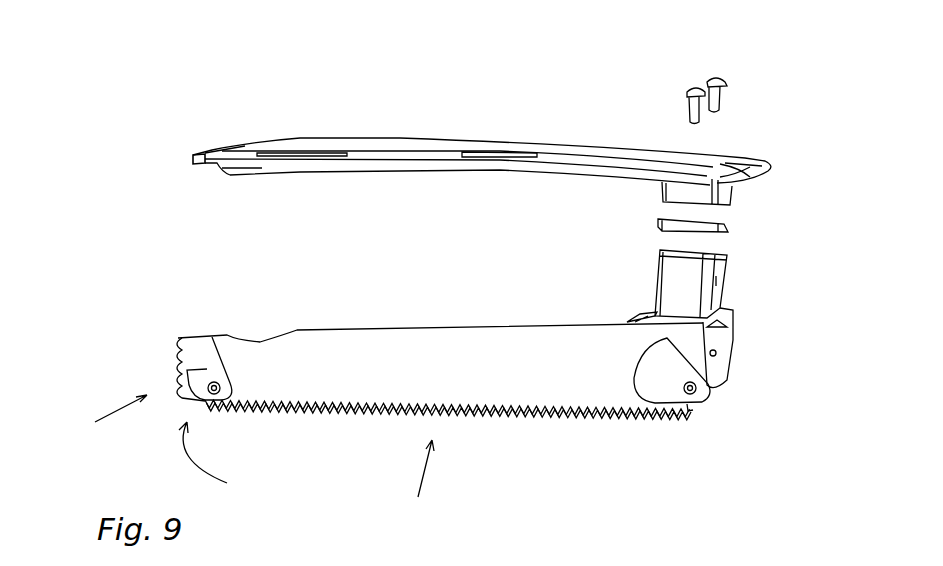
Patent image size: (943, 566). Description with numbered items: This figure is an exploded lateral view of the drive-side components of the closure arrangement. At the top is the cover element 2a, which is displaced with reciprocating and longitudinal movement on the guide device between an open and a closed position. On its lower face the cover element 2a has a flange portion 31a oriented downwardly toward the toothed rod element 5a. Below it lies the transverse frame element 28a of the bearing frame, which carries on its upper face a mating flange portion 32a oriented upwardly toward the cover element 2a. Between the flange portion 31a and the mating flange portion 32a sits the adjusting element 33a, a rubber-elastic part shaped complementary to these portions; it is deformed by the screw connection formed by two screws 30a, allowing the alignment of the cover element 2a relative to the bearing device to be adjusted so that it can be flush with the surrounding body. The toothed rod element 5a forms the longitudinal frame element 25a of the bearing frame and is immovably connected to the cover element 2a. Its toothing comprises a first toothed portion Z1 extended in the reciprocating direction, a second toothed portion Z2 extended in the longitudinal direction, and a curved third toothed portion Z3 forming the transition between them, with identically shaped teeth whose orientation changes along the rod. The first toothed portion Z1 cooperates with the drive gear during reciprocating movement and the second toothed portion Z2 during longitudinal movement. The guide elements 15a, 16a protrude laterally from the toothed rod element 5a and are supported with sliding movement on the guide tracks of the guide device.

The cover element 2a is at (537, 150).
The screws 30a is at (692, 88).
The flange portion 31a is at (725, 213).
The adjusting element 33a is at (658, 226).
The mating flange portion 32a is at (729, 252).
The transverse frame element 28a is at (657, 300).
The toothed rod element 5a is at (440, 338).
The longitudinal frame element 25a is at (433, 350).
The second guide element 16a is at (195, 394).
The first guide element 15a is at (693, 392).
The first toothed portion Z1 is at (92, 421).
The second toothed portion Z2 is at (418, 486).
The third toothed portion Z3 is at (227, 465).